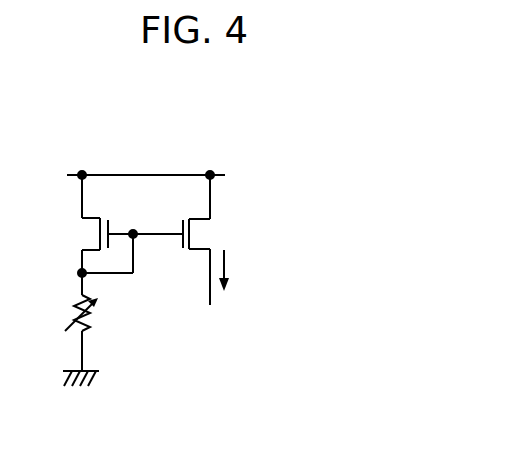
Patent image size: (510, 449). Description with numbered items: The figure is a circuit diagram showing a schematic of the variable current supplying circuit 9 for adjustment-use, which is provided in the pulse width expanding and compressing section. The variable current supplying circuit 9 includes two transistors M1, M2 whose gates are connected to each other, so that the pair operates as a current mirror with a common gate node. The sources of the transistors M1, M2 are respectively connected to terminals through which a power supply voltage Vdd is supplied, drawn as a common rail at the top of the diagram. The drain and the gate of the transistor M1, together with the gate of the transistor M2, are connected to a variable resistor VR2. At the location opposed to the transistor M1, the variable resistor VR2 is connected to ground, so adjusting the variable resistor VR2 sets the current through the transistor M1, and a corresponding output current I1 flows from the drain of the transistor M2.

The variable current supplying circuit 9 is at (215, 142).
The power supply voltage Vdd is at (146, 160).
The transistor M1 is at (100, 218).
The transistor M2 is at (197, 249).
The output current I1 is at (235, 270).
The variable resistor VR2 is at (93, 318).